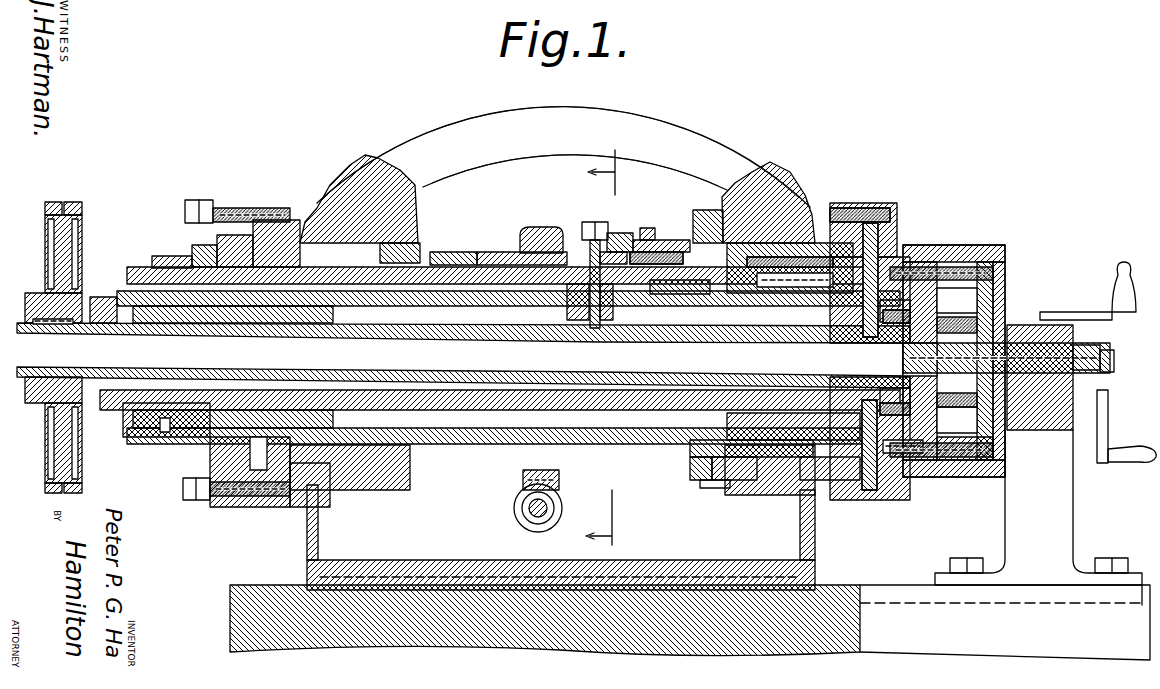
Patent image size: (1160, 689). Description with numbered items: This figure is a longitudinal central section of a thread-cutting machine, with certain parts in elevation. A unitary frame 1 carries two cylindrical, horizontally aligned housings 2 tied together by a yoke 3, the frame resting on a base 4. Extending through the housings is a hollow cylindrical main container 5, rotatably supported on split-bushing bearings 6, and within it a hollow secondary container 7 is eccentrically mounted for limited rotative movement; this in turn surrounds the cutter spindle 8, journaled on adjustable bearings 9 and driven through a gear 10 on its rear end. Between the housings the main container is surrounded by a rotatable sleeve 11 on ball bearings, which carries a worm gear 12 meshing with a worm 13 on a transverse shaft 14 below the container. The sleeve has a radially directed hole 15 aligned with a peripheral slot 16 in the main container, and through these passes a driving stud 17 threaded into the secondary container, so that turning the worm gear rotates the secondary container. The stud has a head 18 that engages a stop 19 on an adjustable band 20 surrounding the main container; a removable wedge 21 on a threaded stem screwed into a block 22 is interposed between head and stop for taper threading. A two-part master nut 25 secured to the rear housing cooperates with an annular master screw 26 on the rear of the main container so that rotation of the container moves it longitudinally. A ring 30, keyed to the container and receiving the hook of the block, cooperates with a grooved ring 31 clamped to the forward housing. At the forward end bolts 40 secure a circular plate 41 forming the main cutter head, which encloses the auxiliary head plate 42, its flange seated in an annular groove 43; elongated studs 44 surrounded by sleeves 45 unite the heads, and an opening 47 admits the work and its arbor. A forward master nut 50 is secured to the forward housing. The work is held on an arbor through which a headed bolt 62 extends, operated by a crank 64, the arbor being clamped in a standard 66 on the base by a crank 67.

The unitary frame 1 is at (380, 532).
The housings 2 is at (418, 222).
The yoke 3 is at (563, 156).
The base 4 is at (826, 590).
The main container 5 is at (432, 462).
The bearings 6 is at (412, 250).
The secondary container 7 is at (462, 412).
The cutter spindle 8 is at (463, 355).
The adjustable bearings 9 is at (165, 432).
The gear 10 is at (82, 242).
The rotatable sleeve 11 is at (560, 478).
The worm gear 12 is at (562, 500).
The worm 13 is at (554, 508).
The shaft 14 is at (558, 516).
The radially directed hole 15 is at (547, 226).
The peripheral slot 16 is at (567, 298).
The driving stud 17 is at (613, 305).
The head 18 is at (606, 236).
The stop 19 is at (620, 246).
The band 20 is at (710, 445).
The removable wedge 21 is at (645, 225).
The block 22 is at (672, 255).
The master nut 25 is at (252, 200).
The annular master screw 26 is at (195, 465).
The ring 30 is at (701, 487).
The ring 31 is at (702, 488).
The bolts 40 is at (957, 310).
The circular plate 41 is at (957, 413).
The circular plate 42 is at (1005, 300).
The annular groove 43 is at (915, 247).
The elongated studs 44 is at (945, 478).
The sleeve 45 is at (903, 462).
The opening 47 is at (995, 318).
The master nut 50 is at (878, 500).
The headed bolt 62 is at (1040, 400).
The crank 64 is at (1108, 425).
The standard 66 is at (1038, 507).
The crank 67 is at (1105, 310).